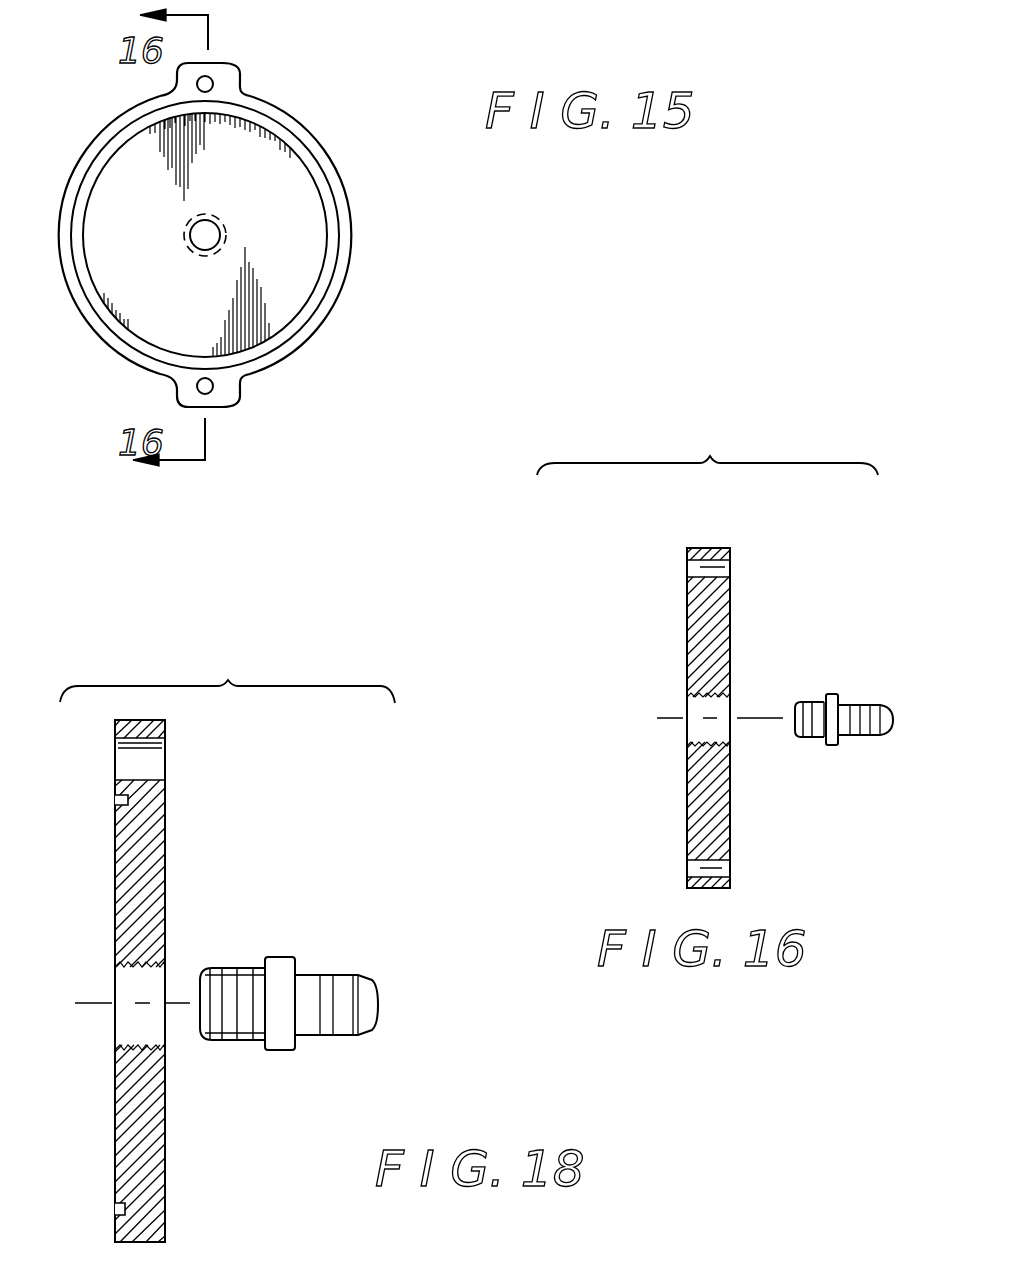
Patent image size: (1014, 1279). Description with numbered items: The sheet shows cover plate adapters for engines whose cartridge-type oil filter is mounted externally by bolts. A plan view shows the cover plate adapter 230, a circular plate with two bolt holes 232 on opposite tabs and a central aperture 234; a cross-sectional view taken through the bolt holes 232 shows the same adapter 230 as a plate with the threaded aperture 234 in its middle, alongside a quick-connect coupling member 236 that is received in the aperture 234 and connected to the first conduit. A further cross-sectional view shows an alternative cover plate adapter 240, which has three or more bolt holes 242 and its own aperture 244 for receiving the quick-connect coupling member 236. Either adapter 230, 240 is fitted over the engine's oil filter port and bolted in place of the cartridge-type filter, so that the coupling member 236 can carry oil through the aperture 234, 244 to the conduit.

In FIG. 15, the cover plate adapter 230 is at (312, 200).
In FIG. 16, the cover plate adapter 230 is at (717, 602).
In FIG. 15, the bolt holes 232 is at (206, 84).
In FIG. 16, the bolt holes 232 is at (690, 568).
In FIG. 15, the aperture 234 is at (213, 233).
In FIG. 16, the aperture 234 is at (694, 746).
In FIG. 16, the quick-connect coupling member 236 is at (863, 736).
In FIG. 18, the quick-connect coupling member 236 is at (307, 972).
In FIG. 18, the cover plate adapter 240 is at (153, 817).
In FIG. 18, the bolt holes 242 is at (148, 745).
In FIG. 18, the aperture 244 is at (152, 965).